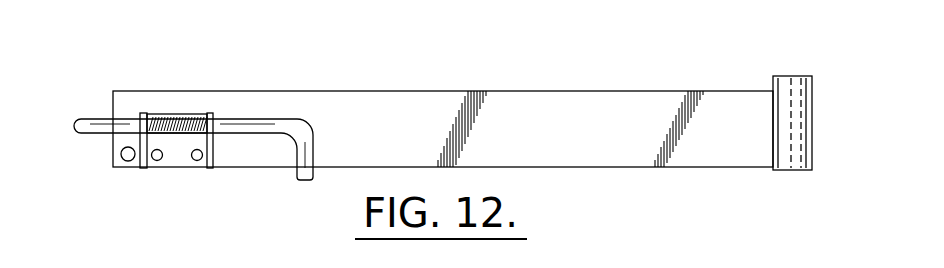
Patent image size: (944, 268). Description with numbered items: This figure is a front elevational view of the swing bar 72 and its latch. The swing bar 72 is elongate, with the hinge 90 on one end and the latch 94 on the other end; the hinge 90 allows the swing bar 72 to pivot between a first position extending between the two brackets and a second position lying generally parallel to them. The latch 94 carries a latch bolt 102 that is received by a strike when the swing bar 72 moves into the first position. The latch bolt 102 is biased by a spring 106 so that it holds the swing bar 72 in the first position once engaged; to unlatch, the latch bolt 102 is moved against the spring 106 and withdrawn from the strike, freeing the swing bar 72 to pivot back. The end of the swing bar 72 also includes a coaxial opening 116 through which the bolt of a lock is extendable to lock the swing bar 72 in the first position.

The swing bar 72 is at (447, 60).
The hinge 90 is at (812, 118).
The latch 94 is at (95, 173).
The latch bolt 102 is at (92, 119).
The spring 106 is at (170, 115).
The coaxial opening 116 is at (125, 167).